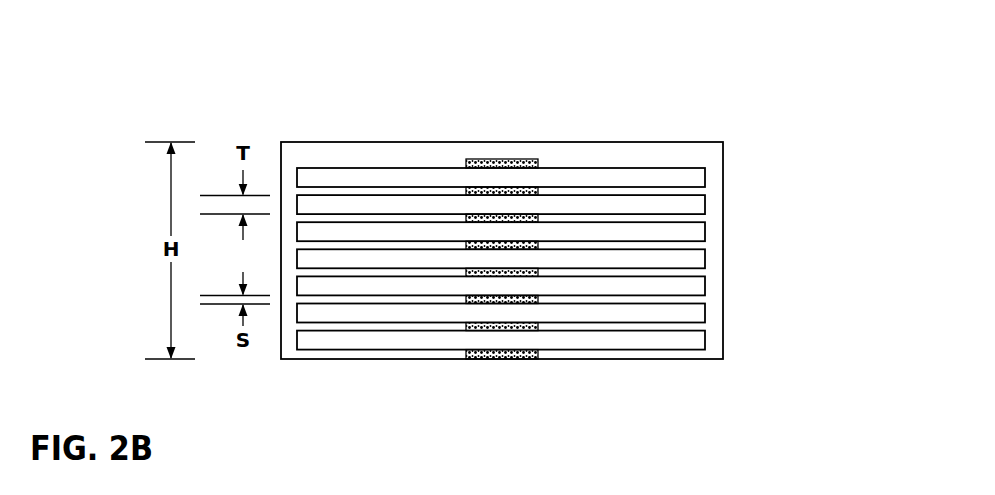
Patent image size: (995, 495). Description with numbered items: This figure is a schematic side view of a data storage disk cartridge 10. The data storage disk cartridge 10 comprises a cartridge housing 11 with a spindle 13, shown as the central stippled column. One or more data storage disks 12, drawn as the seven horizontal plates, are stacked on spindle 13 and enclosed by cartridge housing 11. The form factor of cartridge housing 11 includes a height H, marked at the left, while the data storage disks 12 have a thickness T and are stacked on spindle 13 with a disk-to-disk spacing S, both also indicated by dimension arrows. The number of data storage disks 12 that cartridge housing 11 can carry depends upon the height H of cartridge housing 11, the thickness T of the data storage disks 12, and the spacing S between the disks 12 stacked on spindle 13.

The data storage disk cartridge 10 is at (336, 84).
The cartridge housing 11 is at (648, 160).
The data storage disks 12 is at (707, 340).
The spindle 13 is at (502, 157).